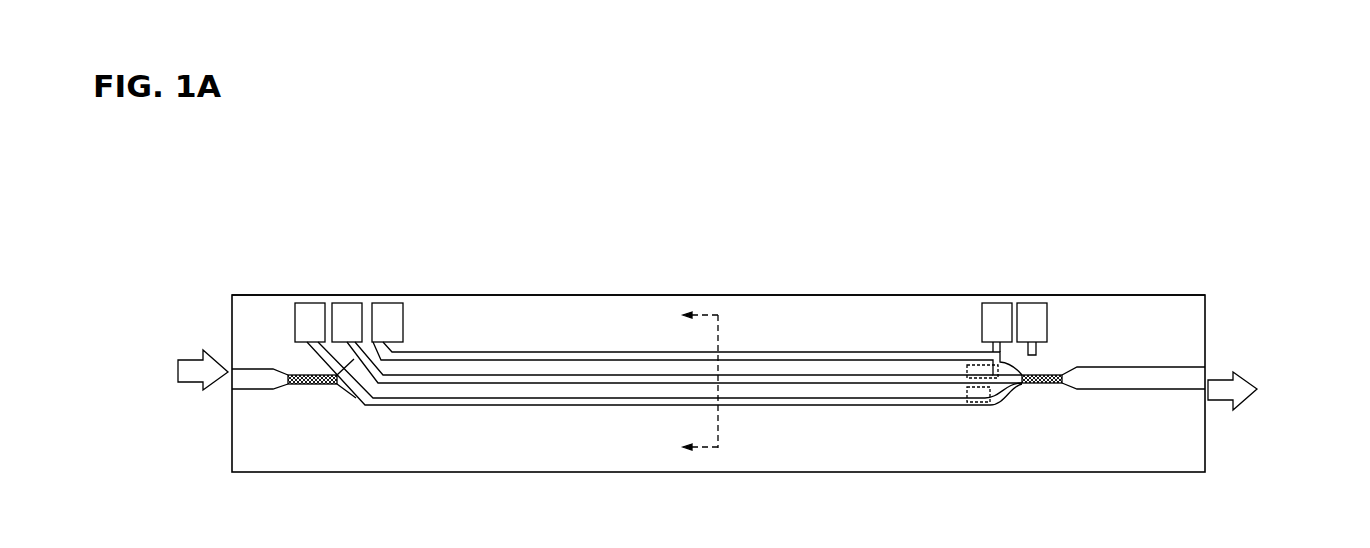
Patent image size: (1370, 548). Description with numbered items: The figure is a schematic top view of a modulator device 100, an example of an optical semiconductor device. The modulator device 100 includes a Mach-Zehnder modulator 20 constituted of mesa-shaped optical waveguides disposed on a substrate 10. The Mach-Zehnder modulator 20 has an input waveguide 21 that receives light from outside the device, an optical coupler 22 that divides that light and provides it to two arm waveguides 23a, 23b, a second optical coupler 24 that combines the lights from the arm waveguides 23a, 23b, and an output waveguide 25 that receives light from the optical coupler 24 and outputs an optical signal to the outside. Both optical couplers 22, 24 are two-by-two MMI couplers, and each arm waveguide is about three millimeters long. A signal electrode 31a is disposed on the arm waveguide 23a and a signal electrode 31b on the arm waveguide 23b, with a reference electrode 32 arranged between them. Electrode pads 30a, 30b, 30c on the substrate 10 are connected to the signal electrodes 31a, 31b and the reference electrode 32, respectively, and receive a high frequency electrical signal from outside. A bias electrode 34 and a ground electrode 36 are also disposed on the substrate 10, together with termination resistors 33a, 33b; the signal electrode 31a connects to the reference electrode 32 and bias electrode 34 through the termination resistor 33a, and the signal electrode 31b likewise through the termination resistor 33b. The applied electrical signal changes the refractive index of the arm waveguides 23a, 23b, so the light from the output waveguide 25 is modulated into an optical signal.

The modulator device 100 is at (1188, 250).
The substrate 10 is at (1074, 447).
The Mach-Zehnder modulator 20 is at (818, 292).
The input waveguide 21 is at (259, 367).
The optical coupler 22 is at (313, 388).
The arm waveguide 23a is at (364, 356).
The arm waveguide 23b is at (360, 408).
The optical coupler 24 is at (1040, 386).
The output waveguide 25 is at (1157, 391).
The electrode pad 30a is at (398, 303).
The electrode pad 30b is at (310, 303).
The electrode pad 30c is at (348, 303).
The signal electrode 31a is at (455, 352).
The signal electrode 31b is at (503, 406).
The reference electrode 32 is at (521, 375).
The termination resistor 33a is at (980, 366).
The termination resistor 33b is at (968, 402).
The bias electrode 34 is at (998, 312).
The ground electrode 36 is at (1034, 310).